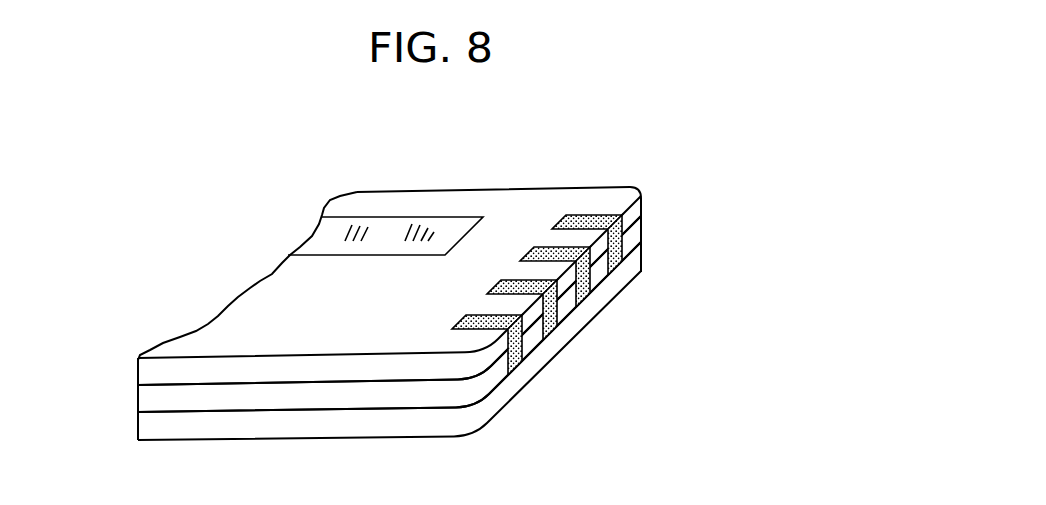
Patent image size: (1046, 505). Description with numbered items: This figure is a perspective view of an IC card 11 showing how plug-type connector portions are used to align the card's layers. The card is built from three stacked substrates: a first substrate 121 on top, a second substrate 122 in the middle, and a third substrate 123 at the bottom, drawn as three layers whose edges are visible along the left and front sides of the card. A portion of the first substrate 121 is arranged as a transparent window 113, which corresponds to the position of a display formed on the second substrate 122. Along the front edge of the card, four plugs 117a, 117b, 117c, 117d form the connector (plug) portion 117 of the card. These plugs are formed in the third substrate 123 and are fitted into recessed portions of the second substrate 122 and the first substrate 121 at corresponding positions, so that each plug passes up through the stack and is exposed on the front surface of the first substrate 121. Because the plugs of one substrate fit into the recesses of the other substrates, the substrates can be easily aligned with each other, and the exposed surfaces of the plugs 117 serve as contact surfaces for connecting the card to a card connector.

The IC card 11 is at (408, 260).
The transparent window 113 is at (443, 225).
The plug 117 is at (607, 278).
The plug 117a is at (622, 261).
The plug 117b is at (590, 293).
The plug 117c is at (557, 326).
The plug 117d is at (522, 361).
The first substrate 121 is at (148, 374).
The second substrate 122 is at (148, 399).
The third substrate 123 is at (148, 428).